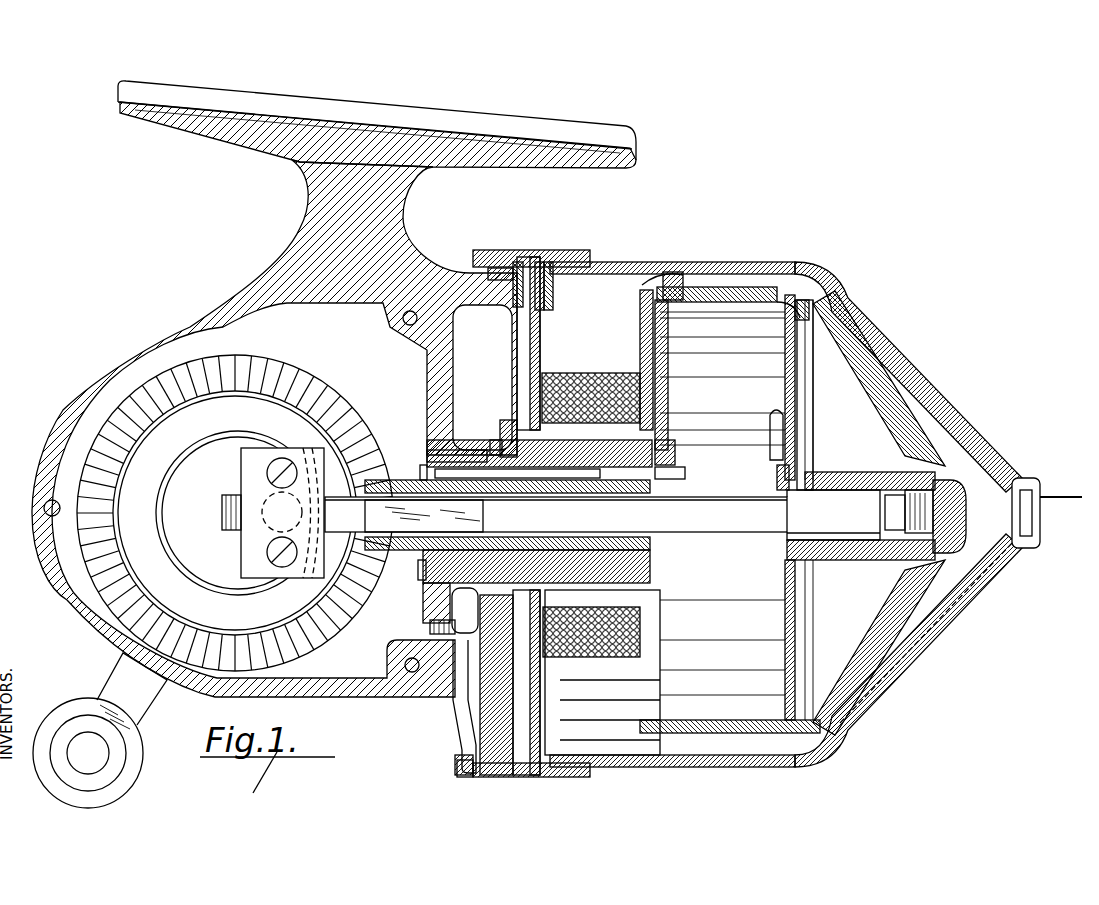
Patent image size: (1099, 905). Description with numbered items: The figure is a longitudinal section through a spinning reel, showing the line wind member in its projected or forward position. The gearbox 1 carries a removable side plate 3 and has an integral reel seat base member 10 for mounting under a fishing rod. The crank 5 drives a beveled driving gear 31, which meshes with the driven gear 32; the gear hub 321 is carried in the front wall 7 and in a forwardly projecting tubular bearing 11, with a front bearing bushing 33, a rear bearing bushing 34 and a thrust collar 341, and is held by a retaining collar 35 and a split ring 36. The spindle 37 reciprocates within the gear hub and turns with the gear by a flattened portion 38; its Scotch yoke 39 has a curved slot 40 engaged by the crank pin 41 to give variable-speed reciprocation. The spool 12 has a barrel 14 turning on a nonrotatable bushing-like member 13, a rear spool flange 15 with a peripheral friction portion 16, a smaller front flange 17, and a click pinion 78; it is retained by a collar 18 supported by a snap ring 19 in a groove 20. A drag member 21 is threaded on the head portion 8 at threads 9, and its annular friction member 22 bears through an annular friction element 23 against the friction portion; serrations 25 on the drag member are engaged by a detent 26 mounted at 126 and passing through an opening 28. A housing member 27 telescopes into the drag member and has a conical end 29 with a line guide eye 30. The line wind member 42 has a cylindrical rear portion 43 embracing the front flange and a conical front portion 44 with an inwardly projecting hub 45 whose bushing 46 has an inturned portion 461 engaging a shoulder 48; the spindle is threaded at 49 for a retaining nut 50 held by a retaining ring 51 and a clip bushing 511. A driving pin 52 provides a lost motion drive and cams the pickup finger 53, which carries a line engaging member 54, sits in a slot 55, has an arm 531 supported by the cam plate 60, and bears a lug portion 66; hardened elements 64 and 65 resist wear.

The gearbox 1 is at (62, 418).
The side plate 3 is at (649, 242).
The crank 5 is at (117, 682).
The front wall 7 is at (430, 372).
The head portion 8 is at (516, 273).
The threads 9 is at (496, 280).
The reel seat base member 10 is at (200, 122).
The tubular bearing 11 is at (493, 563).
The spool 12 is at (640, 422).
The bushing-like member 13 is at (640, 440).
The barrel 14 is at (667, 610).
The rear spool flange 15 is at (533, 345).
The peripheral friction portion 16 is at (497, 777).
The front flange 17 is at (637, 683).
The collar 18 is at (507, 430).
The snap ring 19 is at (498, 443).
The groove 20 is at (462, 634).
The drag member 21 is at (540, 277).
The annular friction member 22 is at (556, 280).
The annular friction element 23 is at (530, 768).
The serrations 25 is at (470, 260).
The detent 26 is at (468, 730).
The housing member 27 is at (752, 264).
The opening 28 is at (494, 738).
The conical end 29 is at (880, 326).
The line guide eye 30 is at (1033, 525).
The beveled driving gear 31 is at (263, 368).
The driven gear 32 is at (328, 450).
The front bearing bushing 33 is at (660, 566).
The rear bearing bushing 34 is at (427, 452).
The retaining collar 35 is at (676, 470).
The split ring 36 is at (673, 478).
The spindle 37 is at (822, 487).
The flattened portion 38 is at (310, 582).
The Scotch yoke 39 is at (247, 548).
The slot 40 is at (255, 486).
The crank pin 41 is at (220, 506).
The line wind member 42 is at (883, 655).
The cylindrical rear portion 43 is at (757, 735).
The conical front portion 44 is at (900, 610).
The hub 45 is at (858, 482).
The bushing 46 is at (950, 570).
The shoulder 48 is at (866, 506).
The threaded portion 49 is at (960, 490).
The retaining nut 50 is at (1012, 488).
The retaining ring 51 is at (947, 480).
The driving pin 52 is at (783, 480).
The pickup finger 53 is at (827, 313).
The line engaging member 54 is at (676, 277).
The slot 55 is at (752, 292).
The cam plate 60 is at (668, 368).
The hardened element 64 is at (795, 313).
The hardened element 65 is at (577, 372).
The lug portion 66 is at (768, 428).
The click pinion 78 is at (535, 415).
The detent mounting 126 is at (457, 636).
The gear hub 321 is at (547, 484).
The thrust collar 341 is at (416, 575).
The inturned portion 461 is at (920, 440).
The clip bushing 511 is at (960, 537).
The pickup finger arm 531 is at (769, 297).